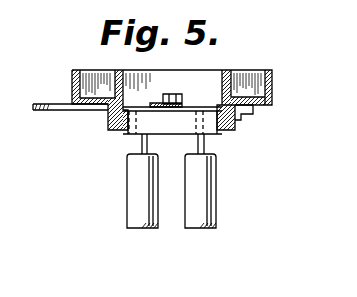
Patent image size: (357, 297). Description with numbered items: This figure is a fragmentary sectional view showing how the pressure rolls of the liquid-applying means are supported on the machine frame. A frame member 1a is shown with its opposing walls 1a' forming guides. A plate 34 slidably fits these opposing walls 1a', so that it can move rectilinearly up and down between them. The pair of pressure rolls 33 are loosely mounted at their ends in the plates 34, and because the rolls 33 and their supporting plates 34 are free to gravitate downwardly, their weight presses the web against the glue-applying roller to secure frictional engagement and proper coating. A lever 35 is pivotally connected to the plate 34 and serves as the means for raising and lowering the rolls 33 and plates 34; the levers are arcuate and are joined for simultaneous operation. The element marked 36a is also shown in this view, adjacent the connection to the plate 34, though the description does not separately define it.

The frame member 1a is at (171, 92).
The opposing wall 1a' is at (210, 92).
The pressure roll 33 is at (200, 229).
The plate 34 is at (218, 133).
The lever 35 is at (91, 111).
The nut 36a is at (172, 93).